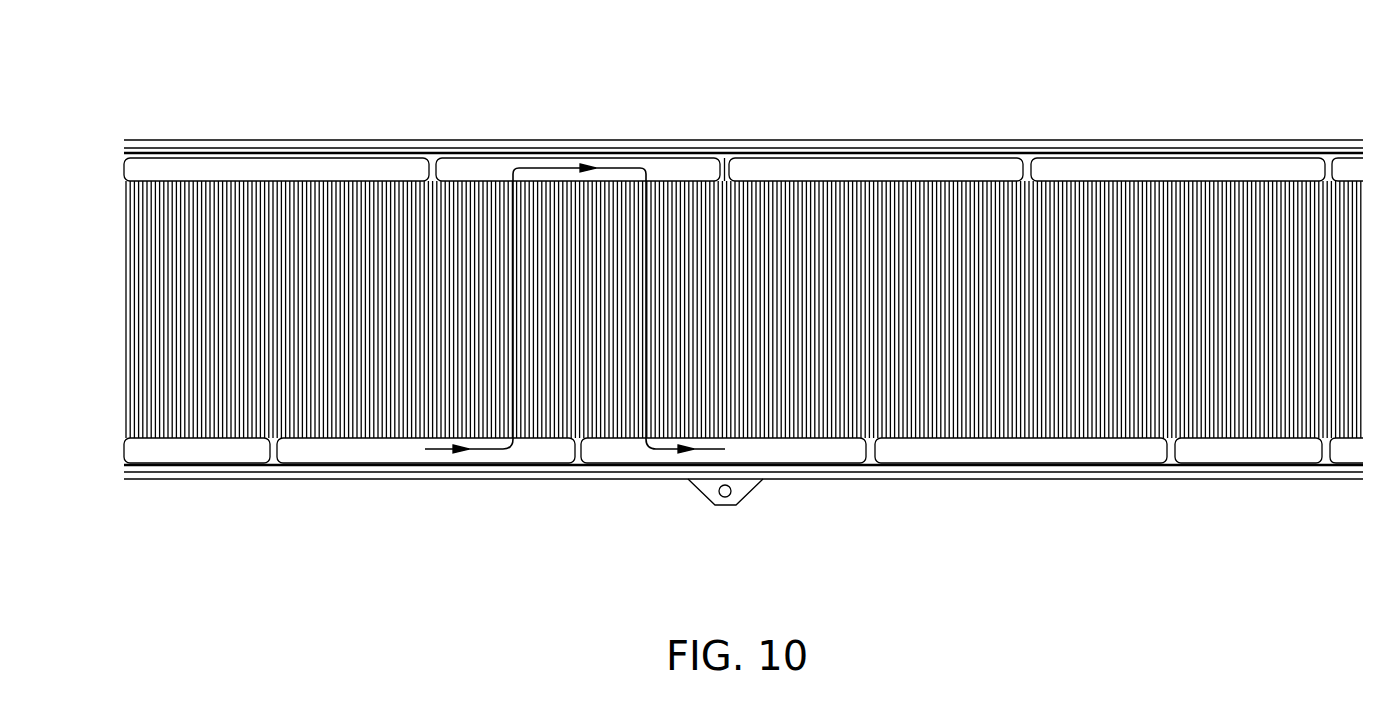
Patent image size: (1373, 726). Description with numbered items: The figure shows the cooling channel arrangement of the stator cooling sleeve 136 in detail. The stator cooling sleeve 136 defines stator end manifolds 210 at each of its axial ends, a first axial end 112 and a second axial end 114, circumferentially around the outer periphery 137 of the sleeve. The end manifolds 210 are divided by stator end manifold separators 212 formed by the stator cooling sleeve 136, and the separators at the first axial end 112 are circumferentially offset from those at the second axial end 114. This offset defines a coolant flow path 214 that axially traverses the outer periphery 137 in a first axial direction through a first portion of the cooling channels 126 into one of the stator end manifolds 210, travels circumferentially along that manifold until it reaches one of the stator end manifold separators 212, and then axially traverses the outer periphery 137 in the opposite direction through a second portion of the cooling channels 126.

The first axial end 112 is at (273, 130).
The second axial end 114 is at (333, 469).
The cooling channels 126 is at (947, 407).
The stator cooling sleeve 136 is at (1177, 80).
The outer periphery 137 is at (70, 314).
The stator end manifolds 210 is at (937, 162).
The stator end manifold separators 212 is at (716, 160).
The coolant flow path 214 is at (478, 445).